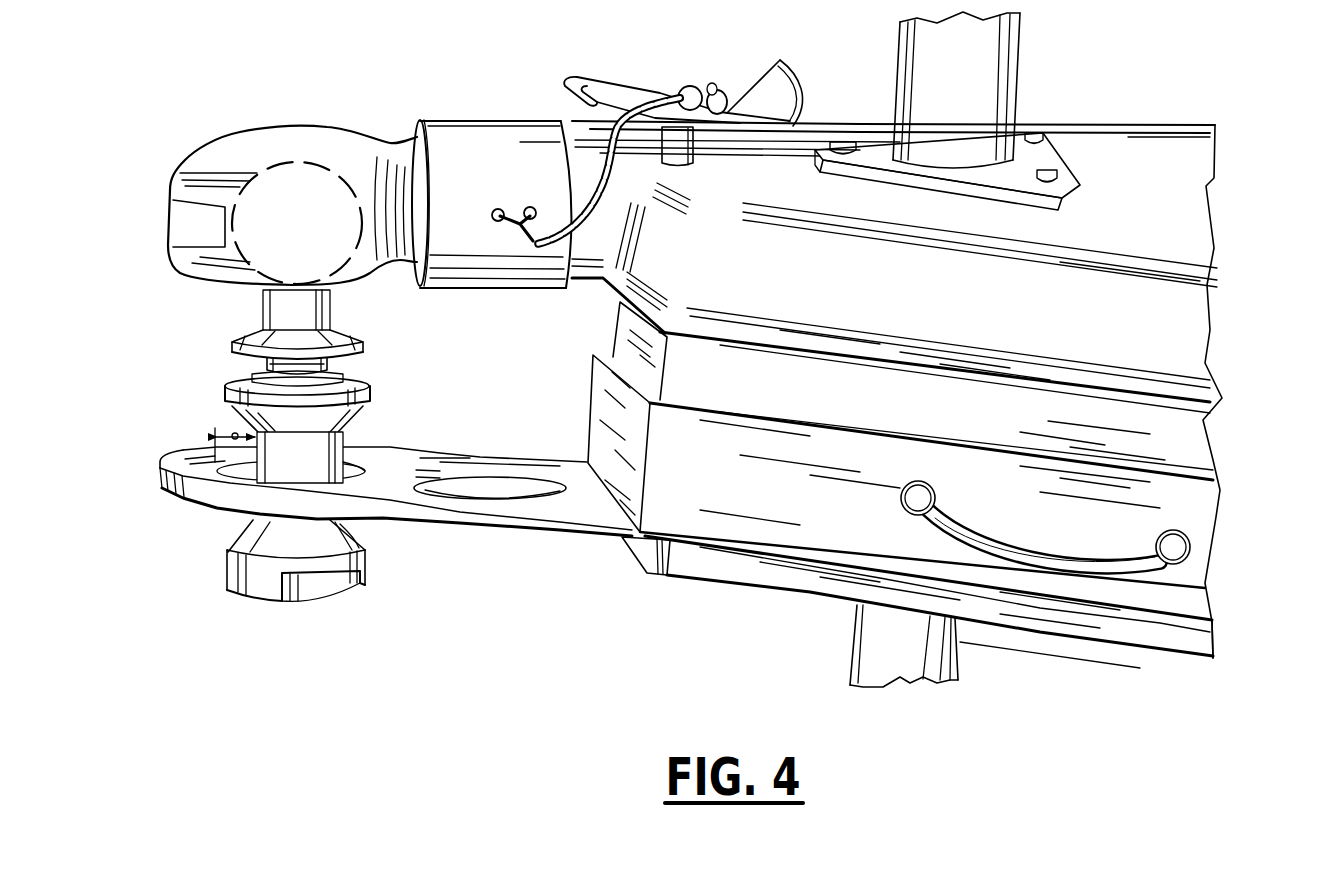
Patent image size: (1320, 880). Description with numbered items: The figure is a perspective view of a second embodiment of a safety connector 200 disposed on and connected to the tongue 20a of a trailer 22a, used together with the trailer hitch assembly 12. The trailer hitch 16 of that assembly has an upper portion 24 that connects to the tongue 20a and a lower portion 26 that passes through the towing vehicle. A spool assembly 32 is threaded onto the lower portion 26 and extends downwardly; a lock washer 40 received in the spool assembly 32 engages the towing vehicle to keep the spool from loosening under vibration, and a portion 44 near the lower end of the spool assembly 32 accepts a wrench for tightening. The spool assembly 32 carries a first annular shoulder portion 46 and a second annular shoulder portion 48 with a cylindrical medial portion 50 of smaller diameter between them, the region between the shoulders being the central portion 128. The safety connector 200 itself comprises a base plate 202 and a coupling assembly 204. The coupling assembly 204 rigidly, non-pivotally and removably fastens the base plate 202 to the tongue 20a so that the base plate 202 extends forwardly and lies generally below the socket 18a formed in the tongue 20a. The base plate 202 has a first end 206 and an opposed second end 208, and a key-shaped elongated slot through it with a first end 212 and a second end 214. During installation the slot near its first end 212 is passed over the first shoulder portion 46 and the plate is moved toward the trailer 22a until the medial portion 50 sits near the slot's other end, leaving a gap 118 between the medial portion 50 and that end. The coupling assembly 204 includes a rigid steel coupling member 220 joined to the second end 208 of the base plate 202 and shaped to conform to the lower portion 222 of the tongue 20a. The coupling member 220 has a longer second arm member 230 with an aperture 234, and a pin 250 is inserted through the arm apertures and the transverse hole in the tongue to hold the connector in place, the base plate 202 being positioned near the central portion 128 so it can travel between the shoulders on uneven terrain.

The socket 18a is at (295, 165).
The trailer hitch 16 is at (367, 340).
The trailer hitch assembly 12 is at (232, 330).
The upper portion 24 is at (330, 318).
The lower portion 26 is at (330, 365).
The lock washer 40 is at (258, 370).
The second annular shoulder portion 48 is at (370, 392).
The medial portion 50 is at (345, 445).
The gap 118 is at (238, 434).
The first end 206 is at (160, 470).
The safety connector 200 is at (582, 542).
The base plate 202 is at (463, 531).
The second end 214 is at (228, 478).
The central portion 128 is at (363, 488).
The first end 212 is at (560, 462).
The spool assembly 32 is at (220, 578).
The portion 44 is at (310, 588).
The first annular shoulder portion 46 is at (366, 565).
The tongue 20a is at (617, 320).
The coupling assembly 204 is at (590, 368).
The second end 208 is at (637, 540).
The coupling member 220 is at (720, 540).
The lower portion 222 is at (793, 580).
The second arm member 230 is at (1160, 583).
The pin 250 is at (1063, 582).
The aperture 234 is at (898, 500).
The trailer 22a is at (1027, 72).